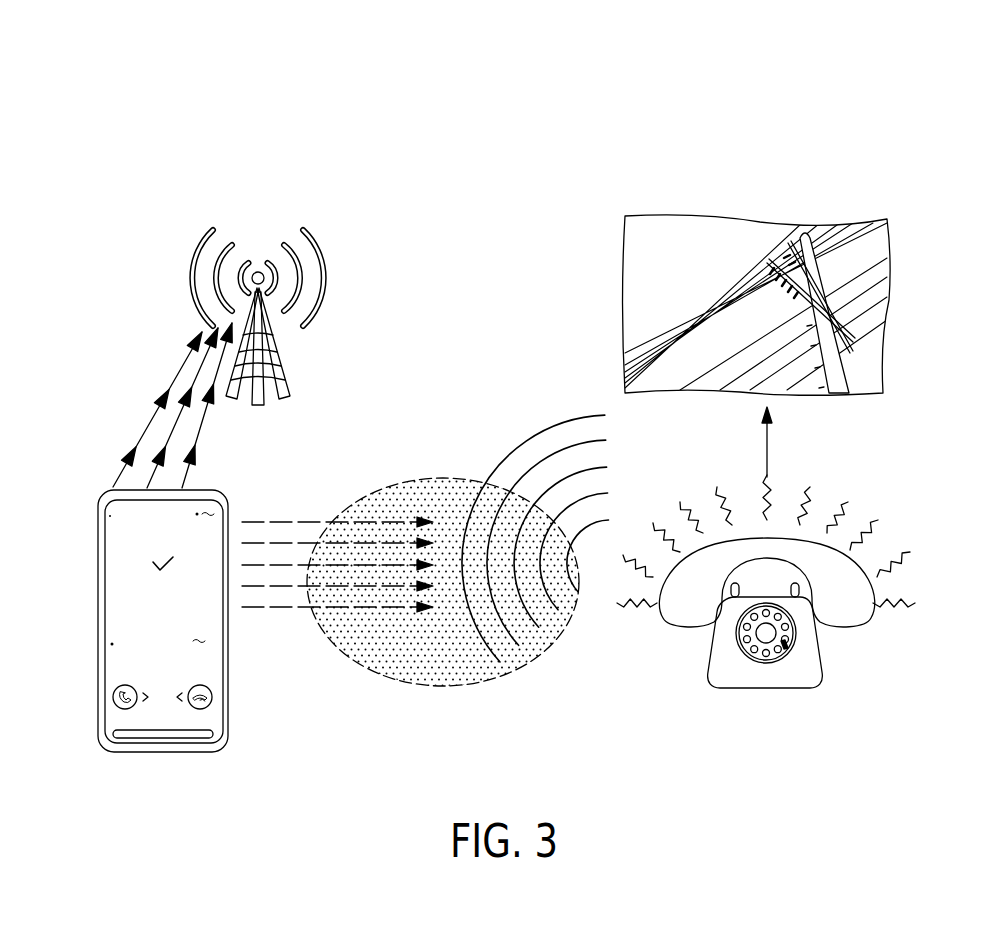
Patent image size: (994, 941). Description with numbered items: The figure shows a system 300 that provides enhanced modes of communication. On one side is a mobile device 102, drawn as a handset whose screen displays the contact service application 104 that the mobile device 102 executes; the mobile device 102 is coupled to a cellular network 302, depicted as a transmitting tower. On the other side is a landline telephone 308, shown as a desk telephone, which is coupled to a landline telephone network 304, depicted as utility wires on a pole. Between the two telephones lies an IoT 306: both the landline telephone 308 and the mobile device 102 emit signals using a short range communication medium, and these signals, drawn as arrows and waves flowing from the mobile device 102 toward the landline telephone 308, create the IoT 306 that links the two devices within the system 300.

The system 300 is at (847, 114).
The mobile device 102 is at (98, 528).
The contact service application 104 is at (128, 595).
The cellular network 302 is at (285, 365).
The landline telephone network 304 is at (882, 353).
The IoT 306 is at (457, 676).
The landline telephone 308 is at (823, 670).